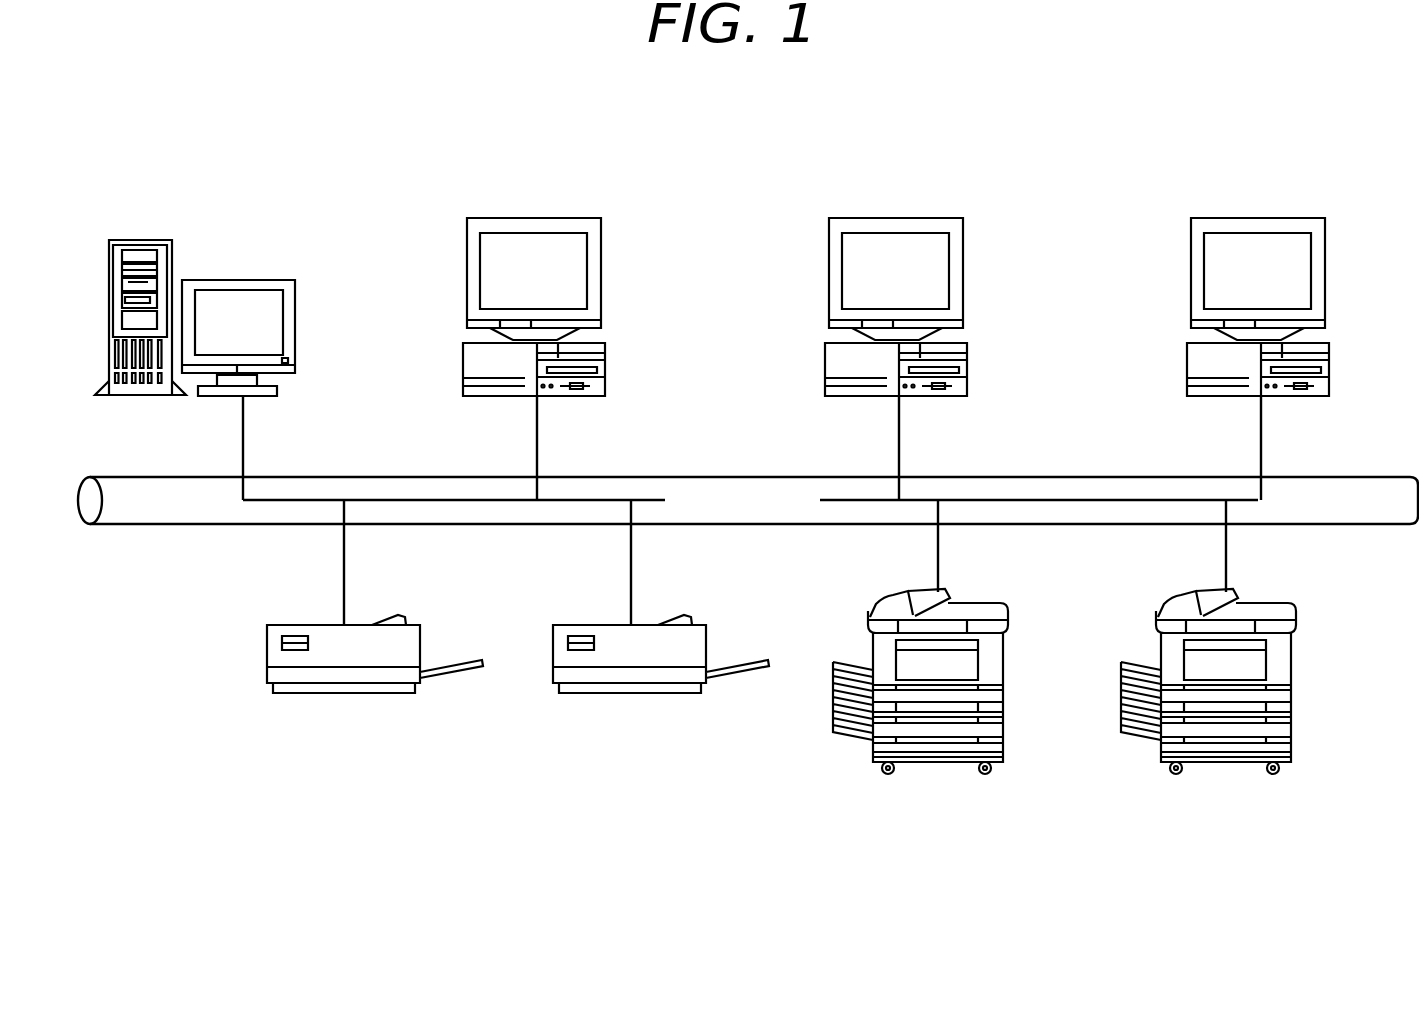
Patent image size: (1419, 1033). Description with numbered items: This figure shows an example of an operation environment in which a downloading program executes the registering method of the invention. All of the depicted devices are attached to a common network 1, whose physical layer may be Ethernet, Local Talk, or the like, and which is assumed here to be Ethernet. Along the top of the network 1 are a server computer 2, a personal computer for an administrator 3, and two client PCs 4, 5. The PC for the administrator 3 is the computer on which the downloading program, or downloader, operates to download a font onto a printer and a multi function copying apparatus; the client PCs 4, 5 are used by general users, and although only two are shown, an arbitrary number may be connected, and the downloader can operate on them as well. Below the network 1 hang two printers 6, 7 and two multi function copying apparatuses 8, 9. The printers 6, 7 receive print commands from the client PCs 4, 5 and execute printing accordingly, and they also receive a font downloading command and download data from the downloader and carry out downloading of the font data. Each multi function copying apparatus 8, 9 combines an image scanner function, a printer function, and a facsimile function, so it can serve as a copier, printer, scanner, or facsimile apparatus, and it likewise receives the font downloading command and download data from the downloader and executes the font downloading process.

The network 1 is at (733, 477).
The server computer 2 is at (237, 280).
The personal computer for an administrator 3 is at (536, 217).
The client PC 4 is at (900, 217).
The client PC 5 is at (1260, 217).
The printer 6 is at (333, 695).
The printer 7 is at (627, 695).
The multi function copying apparatus 8 is at (915, 763).
The multi function copying apparatus 9 is at (1243, 763).